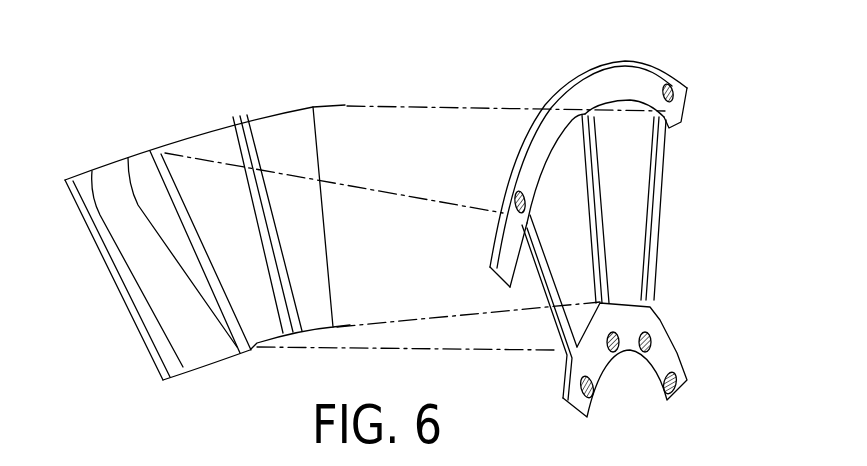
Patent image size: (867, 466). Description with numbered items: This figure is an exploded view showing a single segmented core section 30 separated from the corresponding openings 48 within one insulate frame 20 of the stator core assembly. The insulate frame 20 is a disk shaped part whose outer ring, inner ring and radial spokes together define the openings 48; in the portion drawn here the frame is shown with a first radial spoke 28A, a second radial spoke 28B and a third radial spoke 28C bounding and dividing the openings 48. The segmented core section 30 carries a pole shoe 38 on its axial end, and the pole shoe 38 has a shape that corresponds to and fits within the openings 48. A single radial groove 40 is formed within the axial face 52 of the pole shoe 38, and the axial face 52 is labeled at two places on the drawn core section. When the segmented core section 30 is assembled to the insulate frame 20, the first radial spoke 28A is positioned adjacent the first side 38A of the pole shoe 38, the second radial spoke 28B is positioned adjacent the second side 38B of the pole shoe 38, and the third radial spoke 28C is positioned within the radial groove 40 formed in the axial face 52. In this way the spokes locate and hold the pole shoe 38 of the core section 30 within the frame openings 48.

The first insulate frame 20 is at (589, 212).
The first radial spoke 28A is at (653, 277).
The second radial spoke 28B is at (542, 280).
The third radial spoke 28C is at (603, 240).
The segmented core section 30 is at (131, 324).
The pole shoe 38 is at (230, 230).
The first side of the pole shoe 38A is at (318, 157).
The second side of the pole shoe 38B is at (177, 193).
The radial groove 40 is at (287, 282).
The openings 48 is at (568, 202).
The axial face 52 is at (233, 206).